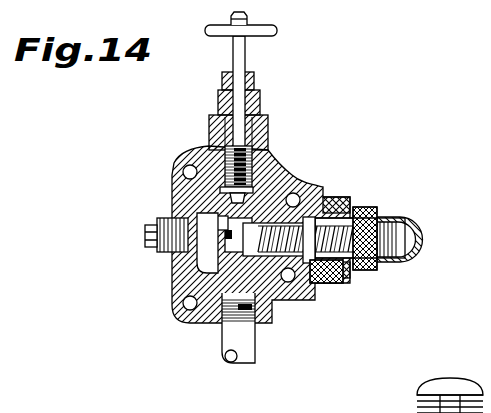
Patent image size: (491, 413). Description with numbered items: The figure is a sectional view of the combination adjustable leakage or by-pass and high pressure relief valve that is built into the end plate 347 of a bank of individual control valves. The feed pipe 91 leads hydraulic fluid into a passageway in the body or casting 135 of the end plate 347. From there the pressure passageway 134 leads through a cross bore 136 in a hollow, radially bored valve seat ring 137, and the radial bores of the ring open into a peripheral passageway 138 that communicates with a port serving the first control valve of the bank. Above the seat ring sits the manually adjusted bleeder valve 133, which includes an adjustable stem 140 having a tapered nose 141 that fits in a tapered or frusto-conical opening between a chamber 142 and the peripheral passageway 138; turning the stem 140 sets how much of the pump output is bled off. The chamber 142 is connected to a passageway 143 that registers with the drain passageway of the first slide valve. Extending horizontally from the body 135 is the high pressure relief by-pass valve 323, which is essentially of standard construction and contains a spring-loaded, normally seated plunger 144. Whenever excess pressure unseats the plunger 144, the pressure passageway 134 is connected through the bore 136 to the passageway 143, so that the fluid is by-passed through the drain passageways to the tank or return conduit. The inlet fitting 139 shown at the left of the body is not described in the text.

The feed pipe 91 is at (227, 348).
The manually adjusted bleeder valve 133 is at (268, 93).
The passageway 134 is at (190, 277).
The body or casting 135 is at (186, 182).
The cross bore 136 is at (212, 232).
The valve seat ring 137 is at (317, 284).
The peripheral passageway 138 is at (271, 305).
The inlet fitting 139 is at (212, 253).
The adjustable stem 140 is at (238, 67).
The tapered nose 141 is at (182, 157).
The chamber 142 is at (283, 171).
The passageway 143 is at (320, 193).
The plunger 144 is at (323, 282).
The high pressure relief by-pass valve 323 is at (355, 200).
The end plate 347 is at (291, 166).